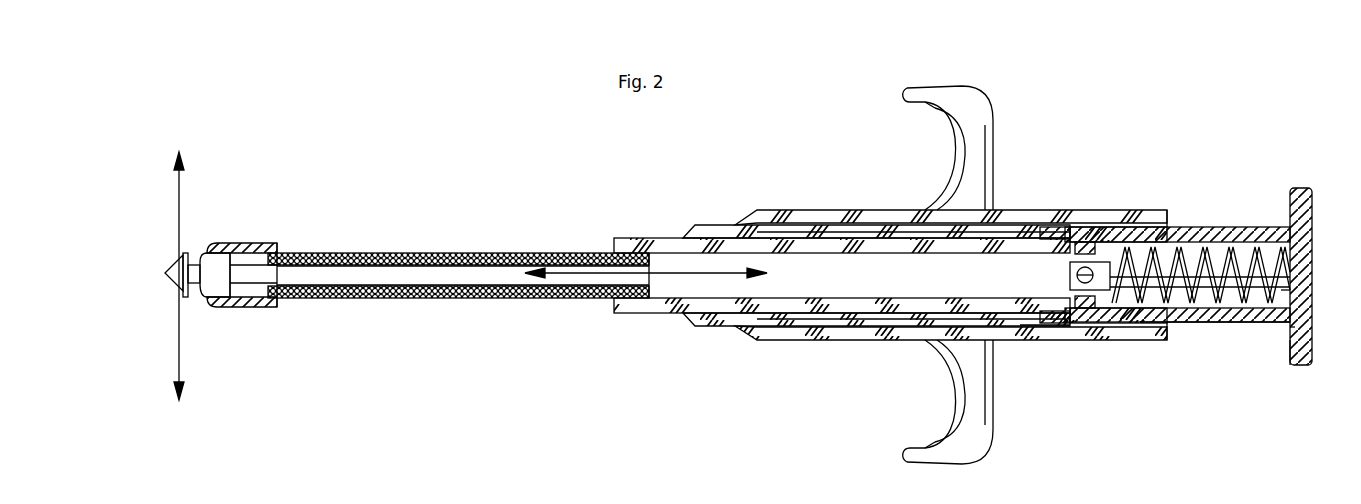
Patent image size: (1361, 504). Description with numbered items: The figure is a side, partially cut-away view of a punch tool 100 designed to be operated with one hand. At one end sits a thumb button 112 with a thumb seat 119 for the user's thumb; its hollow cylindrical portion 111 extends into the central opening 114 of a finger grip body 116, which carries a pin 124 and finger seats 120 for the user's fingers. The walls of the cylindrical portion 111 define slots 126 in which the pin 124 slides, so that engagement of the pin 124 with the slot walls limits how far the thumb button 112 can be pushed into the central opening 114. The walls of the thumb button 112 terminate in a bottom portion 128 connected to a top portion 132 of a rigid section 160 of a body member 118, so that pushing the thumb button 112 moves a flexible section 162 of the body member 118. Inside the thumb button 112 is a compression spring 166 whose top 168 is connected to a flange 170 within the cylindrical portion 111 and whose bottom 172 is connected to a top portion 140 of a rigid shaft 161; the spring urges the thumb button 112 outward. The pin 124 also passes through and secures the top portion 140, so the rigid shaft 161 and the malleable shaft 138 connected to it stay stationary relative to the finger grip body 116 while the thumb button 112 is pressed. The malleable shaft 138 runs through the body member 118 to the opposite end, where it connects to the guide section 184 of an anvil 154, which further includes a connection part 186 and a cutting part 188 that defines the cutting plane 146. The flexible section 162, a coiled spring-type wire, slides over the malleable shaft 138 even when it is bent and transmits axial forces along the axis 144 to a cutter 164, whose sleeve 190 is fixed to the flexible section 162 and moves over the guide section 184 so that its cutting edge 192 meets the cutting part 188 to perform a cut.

The punch tool 100 is at (836, 83).
The hollow cylindrical portion 111 is at (1231, 322).
The thumb button 112 is at (1315, 180).
The central opening 114 is at (1183, 230).
The finger grip body 116 is at (1060, 137).
The body member 118 is at (522, 132).
The thumb seat 119 is at (1296, 327).
The finger seat 120 is at (991, 130).
The pin 124 is at (1087, 262).
The slots 126 is at (1195, 245).
The bottom portion 128 is at (1052, 322).
The top portion of rigid section 132 is at (1045, 325).
The malleable shaft 138 is at (430, 275).
The top portion of rigid shaft 140 is at (1162, 320).
The axis 144 is at (598, 276).
The cutting plane 146 is at (179, 350).
The anvil 154 is at (203, 195).
The rigid section 160 is at (672, 307).
The rigid shaft 161 is at (835, 272).
The flexible section 162 is at (487, 250).
The cutter 164 is at (315, 125).
The compression spring 166 is at (1232, 250).
The top of compression spring 168 is at (1290, 292).
The flange 170 is at (1277, 325).
The bottom of compression spring 172 is at (1105, 256).
The guide section 184 is at (232, 310).
The connection part 186 is at (218, 302).
The cutting part 188 is at (192, 330).
The sleeve 190 is at (270, 240).
The cutting edge 192 is at (228, 240).